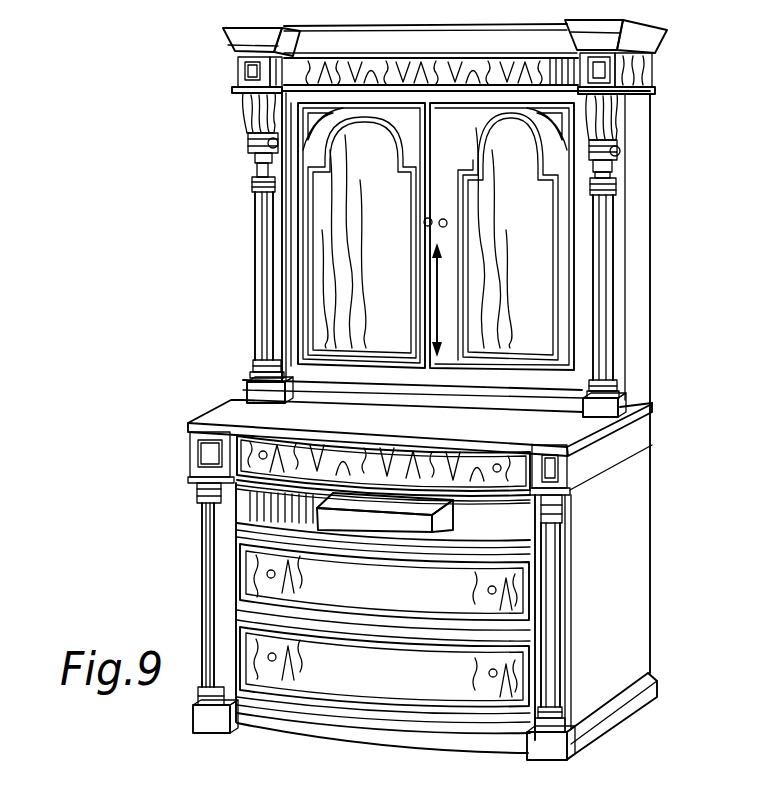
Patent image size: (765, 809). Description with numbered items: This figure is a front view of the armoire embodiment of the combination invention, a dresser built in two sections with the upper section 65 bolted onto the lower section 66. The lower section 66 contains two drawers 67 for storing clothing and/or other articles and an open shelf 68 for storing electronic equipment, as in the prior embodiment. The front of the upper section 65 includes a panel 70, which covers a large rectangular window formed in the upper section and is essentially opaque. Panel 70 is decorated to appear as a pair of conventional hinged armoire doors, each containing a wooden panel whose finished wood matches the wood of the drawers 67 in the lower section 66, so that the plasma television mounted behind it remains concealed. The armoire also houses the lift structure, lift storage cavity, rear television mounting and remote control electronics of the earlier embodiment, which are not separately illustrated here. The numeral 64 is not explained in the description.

The hutch 64 is at (243, 222).
The upper section 65 is at (255, 254).
The lower section 66 is at (222, 406).
The drawers 67 is at (330, 688).
The open shelf 68 is at (248, 489).
The panel 70 is at (531, 218).